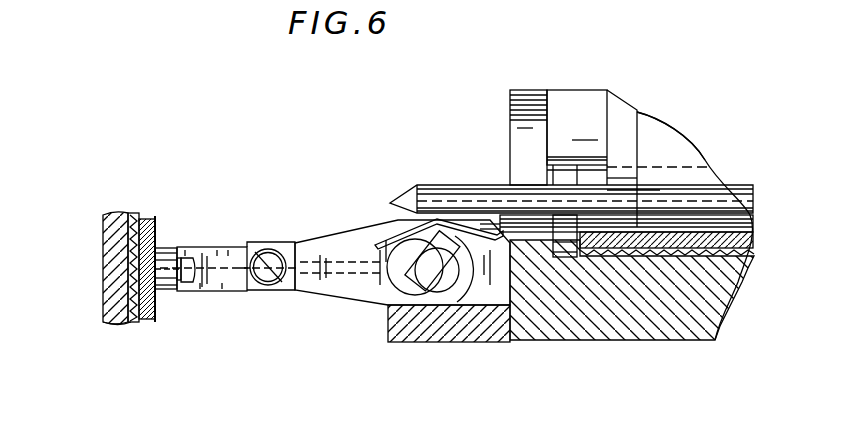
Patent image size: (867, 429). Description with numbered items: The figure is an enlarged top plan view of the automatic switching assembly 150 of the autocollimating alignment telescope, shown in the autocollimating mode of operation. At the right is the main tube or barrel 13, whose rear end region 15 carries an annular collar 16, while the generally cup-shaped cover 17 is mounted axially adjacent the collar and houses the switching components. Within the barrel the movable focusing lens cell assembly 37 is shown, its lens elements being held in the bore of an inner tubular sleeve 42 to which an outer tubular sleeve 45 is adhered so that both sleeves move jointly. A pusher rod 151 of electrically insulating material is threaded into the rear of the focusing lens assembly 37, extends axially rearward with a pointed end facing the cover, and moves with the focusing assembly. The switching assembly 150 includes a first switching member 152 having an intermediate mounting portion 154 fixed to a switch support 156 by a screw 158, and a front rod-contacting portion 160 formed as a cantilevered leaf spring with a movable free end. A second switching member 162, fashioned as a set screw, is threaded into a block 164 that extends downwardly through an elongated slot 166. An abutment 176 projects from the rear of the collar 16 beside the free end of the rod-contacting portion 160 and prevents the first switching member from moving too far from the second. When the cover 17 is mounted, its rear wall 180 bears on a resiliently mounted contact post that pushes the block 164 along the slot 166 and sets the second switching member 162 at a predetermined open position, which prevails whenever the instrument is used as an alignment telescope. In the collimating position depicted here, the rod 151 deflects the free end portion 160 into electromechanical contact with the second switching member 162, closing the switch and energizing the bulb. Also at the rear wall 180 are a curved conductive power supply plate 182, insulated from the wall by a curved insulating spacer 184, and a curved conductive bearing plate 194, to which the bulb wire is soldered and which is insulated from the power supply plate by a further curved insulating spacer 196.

The main tube or barrel 13 is at (750, 241).
The rear end region 15 is at (693, 242).
The annular collar 16 is at (707, 322).
The cup-shaped cover 17 is at (105, 253).
The focusing lens cell assembly 37 is at (688, 130).
The inner tubular sleeve 42 is at (632, 92).
The outer tubular sleeve 45 is at (717, 200).
The automatic switching assembly 150 is at (326, 211).
The pusher rod 151 is at (460, 192).
The first switching member 152 is at (288, 233).
The intermediate mounting portion 154 is at (247, 291).
The switch support 156 is at (345, 287).
The screw 158 is at (268, 277).
The rod-contacting portion 160 is at (397, 222).
The second switching member 162 is at (443, 230).
The block 164 is at (445, 280).
The elongated slot 166 is at (402, 286).
The abutment 176 is at (503, 240).
The rear wall 180 is at (118, 213).
The power supply plate 182 is at (137, 220).
The insulating spacer 184 is at (134, 322).
The bearing plate 194 is at (160, 226).
The insulating spacer 196 is at (148, 222).